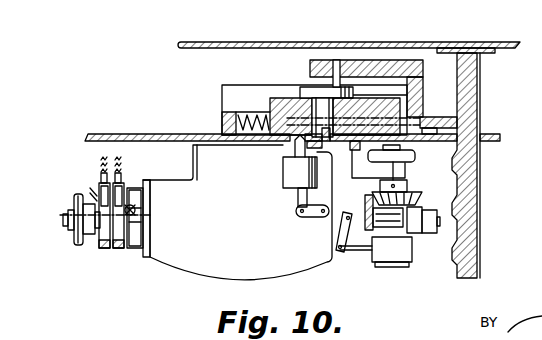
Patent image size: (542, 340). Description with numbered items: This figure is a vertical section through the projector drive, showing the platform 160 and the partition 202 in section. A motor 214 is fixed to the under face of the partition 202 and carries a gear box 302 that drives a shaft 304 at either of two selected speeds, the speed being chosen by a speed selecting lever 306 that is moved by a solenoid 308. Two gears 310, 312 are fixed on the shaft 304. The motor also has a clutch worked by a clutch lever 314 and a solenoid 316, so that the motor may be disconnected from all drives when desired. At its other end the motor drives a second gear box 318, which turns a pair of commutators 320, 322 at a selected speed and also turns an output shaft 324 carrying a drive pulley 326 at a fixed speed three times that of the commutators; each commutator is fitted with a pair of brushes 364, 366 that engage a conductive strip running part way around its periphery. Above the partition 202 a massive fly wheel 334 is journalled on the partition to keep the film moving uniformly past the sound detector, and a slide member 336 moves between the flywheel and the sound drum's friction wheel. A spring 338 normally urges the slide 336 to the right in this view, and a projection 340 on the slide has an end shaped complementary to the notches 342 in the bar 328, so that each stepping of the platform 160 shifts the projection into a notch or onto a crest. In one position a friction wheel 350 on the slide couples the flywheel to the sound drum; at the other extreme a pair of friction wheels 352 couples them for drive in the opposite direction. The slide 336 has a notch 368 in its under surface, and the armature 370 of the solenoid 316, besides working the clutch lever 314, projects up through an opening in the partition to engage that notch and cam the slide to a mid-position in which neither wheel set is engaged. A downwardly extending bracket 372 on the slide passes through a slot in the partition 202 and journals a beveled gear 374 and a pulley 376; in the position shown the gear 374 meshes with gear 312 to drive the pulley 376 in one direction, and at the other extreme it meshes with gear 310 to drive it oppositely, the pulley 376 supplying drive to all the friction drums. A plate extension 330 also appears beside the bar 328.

The platform 160 is at (242, 42).
The partition 202 is at (172, 134).
The motor 214 is at (200, 262).
The gear box 302 is at (341, 224).
The shaft 304 is at (387, 230).
The speed selecting lever 306 is at (357, 252).
The solenoid 308 is at (386, 262).
The gear 310 is at (338, 213).
The gear 312 is at (431, 235).
The clutch lever 314 is at (306, 216).
The solenoid 316 is at (293, 180).
The gear box 318 is at (136, 248).
The commutator 320 is at (118, 247).
The commutator 322 is at (104, 243).
The output shaft 324 is at (68, 220).
The drive pulley 326 is at (75, 205).
The bar 328 is at (474, 100).
The plate extension 330 is at (482, 141).
The fly wheel 334 is at (266, 97).
The slide member 336 is at (452, 107).
The spring 338 is at (248, 100).
The projection 340 is at (424, 123).
The notches 342 is at (460, 210).
The friction wheel 350 is at (293, 105).
The friction wheels 352 is at (325, 88).
The brush 364 is at (136, 211).
The brush 366 is at (123, 186).
The notch 368 is at (294, 147).
The armature 370 is at (312, 146).
The bracket 372 is at (360, 140).
The beveled gear 374 is at (402, 186).
The pulley 376 is at (417, 118).